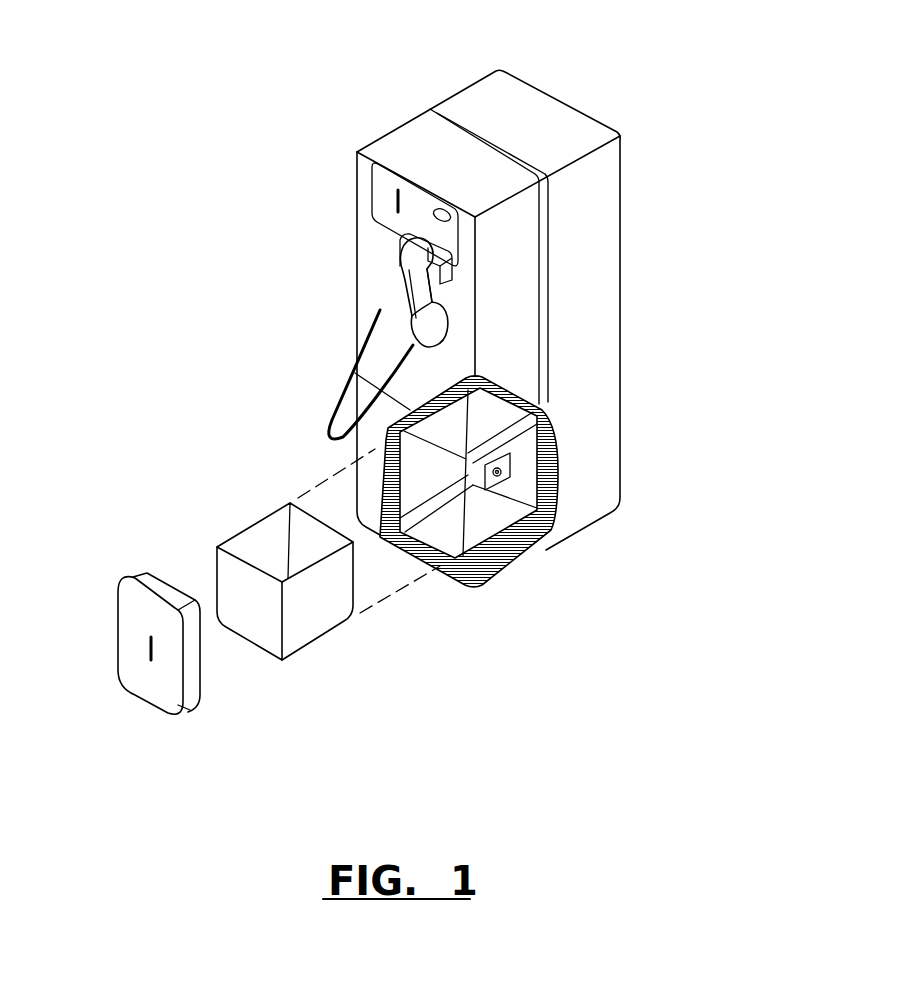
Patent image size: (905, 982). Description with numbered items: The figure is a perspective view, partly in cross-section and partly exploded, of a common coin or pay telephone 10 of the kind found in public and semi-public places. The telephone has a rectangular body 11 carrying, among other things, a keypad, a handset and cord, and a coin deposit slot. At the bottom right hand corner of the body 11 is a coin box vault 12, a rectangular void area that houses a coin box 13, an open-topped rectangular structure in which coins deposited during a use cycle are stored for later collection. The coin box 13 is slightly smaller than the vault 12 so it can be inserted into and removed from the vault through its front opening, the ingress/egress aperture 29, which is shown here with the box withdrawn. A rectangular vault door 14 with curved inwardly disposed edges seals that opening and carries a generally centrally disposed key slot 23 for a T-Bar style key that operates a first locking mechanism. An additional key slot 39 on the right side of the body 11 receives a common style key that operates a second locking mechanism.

The coin or pay telephone 10 is at (648, 143).
The rectangular body 11 is at (597, 413).
The coin box vault 12 is at (542, 562).
The coin box 13 is at (303, 620).
The vault door 14 is at (160, 690).
The key slot 23 is at (147, 645).
The ingress/egress aperture 29 is at (428, 442).
The additional key slot 39 is at (512, 470).